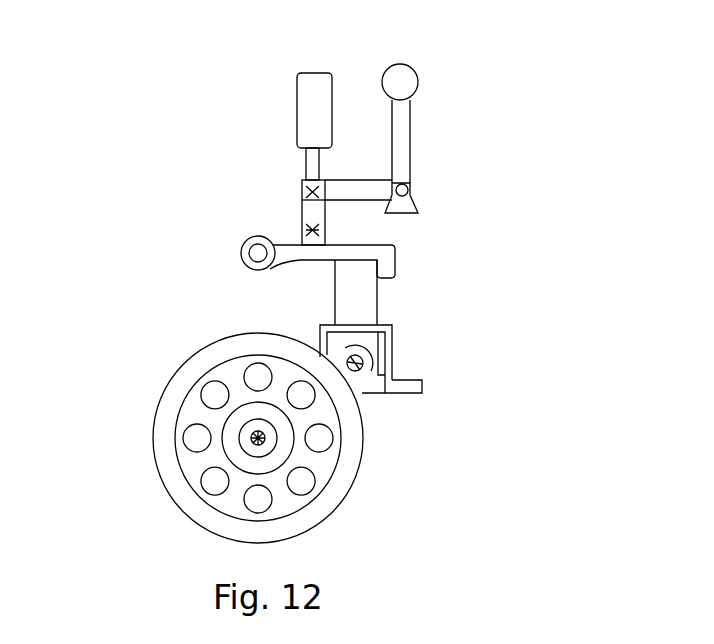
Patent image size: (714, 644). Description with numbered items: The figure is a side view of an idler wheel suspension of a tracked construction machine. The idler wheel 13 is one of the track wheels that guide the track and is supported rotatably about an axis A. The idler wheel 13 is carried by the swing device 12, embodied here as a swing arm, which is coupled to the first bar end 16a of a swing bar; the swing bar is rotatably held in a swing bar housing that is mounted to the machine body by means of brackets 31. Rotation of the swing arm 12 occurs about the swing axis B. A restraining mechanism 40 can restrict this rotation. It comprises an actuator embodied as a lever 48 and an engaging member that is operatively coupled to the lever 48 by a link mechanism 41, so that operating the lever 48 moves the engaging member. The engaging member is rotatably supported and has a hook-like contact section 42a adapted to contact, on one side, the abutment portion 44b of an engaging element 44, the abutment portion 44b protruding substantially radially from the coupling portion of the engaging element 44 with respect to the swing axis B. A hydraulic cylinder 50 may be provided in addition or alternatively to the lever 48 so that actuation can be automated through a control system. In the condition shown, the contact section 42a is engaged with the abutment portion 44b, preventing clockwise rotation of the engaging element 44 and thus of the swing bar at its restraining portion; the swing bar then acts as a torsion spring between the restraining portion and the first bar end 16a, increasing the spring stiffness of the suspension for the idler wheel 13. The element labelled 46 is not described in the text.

The swing device 12 is at (368, 385).
The idler wheel 13 is at (163, 413).
The first bar end 16a is at (353, 352).
The bracket 31 is at (323, 323).
The restraining mechanism 40 is at (477, 127).
The link mechanism 41 is at (293, 207).
The contact section 42a is at (383, 263).
The engaging element 44 is at (370, 298).
The abutment portion 44b is at (330, 270).
The operation lever 46 is at (435, 70).
The lever 48 is at (402, 78).
The hydraulic cylinder 50 is at (283, 108).
The axis A is at (262, 438).
The swing axis B is at (357, 362).